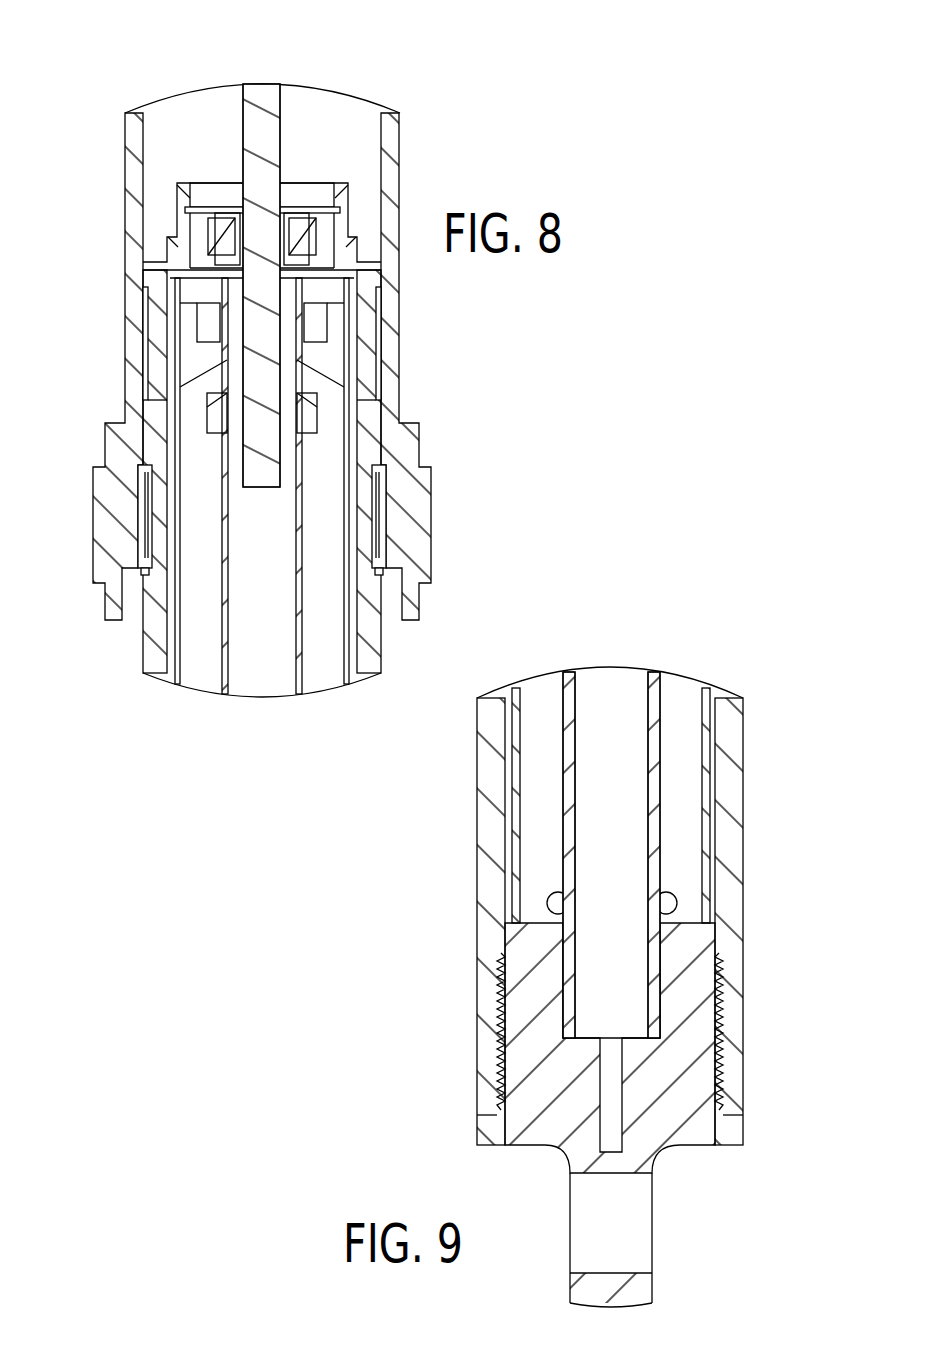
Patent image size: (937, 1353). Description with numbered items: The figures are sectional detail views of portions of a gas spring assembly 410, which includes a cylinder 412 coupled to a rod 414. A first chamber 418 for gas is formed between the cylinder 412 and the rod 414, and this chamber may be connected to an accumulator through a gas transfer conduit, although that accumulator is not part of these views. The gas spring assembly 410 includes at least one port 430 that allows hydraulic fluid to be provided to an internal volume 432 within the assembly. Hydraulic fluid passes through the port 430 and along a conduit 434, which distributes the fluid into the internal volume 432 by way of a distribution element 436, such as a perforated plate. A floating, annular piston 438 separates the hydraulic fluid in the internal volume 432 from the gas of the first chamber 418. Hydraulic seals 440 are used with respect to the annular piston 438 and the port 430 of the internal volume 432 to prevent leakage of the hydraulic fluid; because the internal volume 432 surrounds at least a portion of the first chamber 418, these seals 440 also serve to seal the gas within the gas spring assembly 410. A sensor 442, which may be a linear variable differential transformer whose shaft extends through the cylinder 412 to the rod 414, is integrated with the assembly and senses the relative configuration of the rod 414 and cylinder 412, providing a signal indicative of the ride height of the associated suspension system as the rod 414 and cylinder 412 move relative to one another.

In FIG. 8, the gas spring assembly 410 is at (478, 107).
In FIG. 9, the gas spring assembly 410 is at (788, 675).
In FIG. 8, the cylinder 412 is at (193, 128).
In FIG. 8, the rod 414 is at (322, 668).
In FIG. 9, the rod 414 is at (685, 797).
In FIG. 8, the first chamber 418 is at (145, 135).
In FIG. 8, the port 430 is at (157, 405).
In FIG. 8, the internal volume 432 is at (197, 660).
In FIG. 9, the internal volume 432 is at (545, 700).
In FIG. 8, the conduit 434 is at (170, 603).
In FIG. 9, the conduit 434 is at (502, 800).
In FIG. 9, the distribution element 436 is at (535, 902).
In FIG. 8, the annular piston 438 is at (193, 350).
In FIG. 8, the hydraulic seals 440 is at (177, 357).
In FIG. 9, the hydraulic seals 440 is at (715, 930).
In FIG. 8, the sensor 442 is at (270, 142).